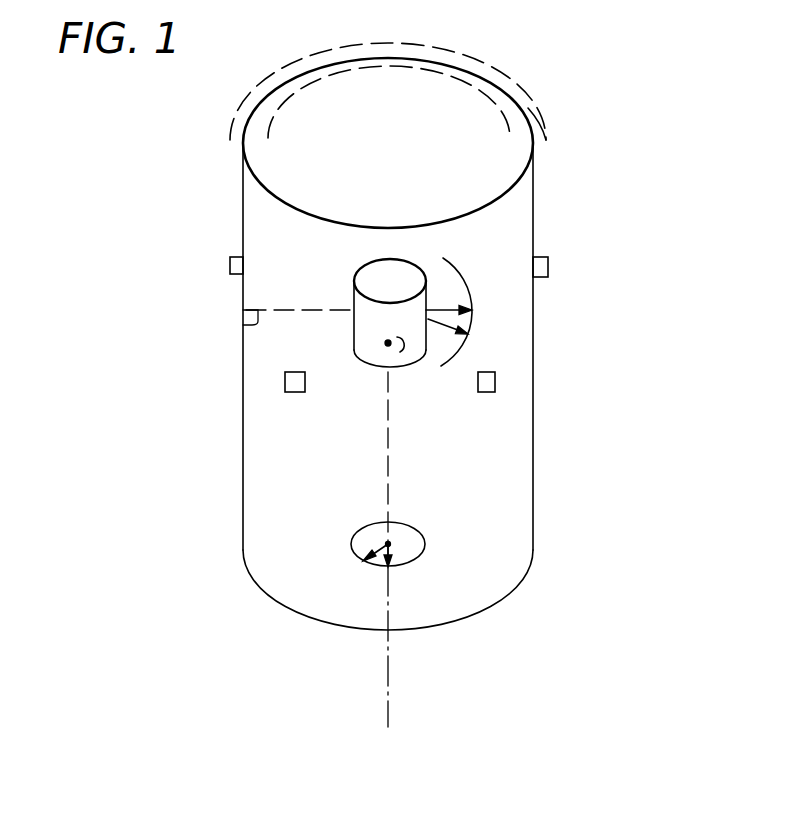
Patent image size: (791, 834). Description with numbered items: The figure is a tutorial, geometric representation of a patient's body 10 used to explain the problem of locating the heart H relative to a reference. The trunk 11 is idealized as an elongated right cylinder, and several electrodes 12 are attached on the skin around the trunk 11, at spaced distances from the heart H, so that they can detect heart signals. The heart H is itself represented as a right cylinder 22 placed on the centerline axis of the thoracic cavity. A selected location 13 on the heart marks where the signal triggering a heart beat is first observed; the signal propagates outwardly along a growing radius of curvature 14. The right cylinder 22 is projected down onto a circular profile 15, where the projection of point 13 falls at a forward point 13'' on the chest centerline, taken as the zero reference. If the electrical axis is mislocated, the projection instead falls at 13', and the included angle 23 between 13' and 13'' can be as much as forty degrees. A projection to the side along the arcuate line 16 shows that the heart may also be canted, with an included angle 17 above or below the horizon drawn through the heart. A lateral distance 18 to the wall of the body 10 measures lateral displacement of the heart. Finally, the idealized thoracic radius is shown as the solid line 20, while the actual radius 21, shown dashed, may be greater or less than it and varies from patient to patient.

The body 10 is at (166, 548).
The trunk 11 is at (533, 548).
The electrodes 12 is at (550, 266).
The selected location 13 is at (360, 383).
The projected point 13' is at (297, 588).
The projected point 13'' is at (440, 613).
The radius of curvature 14 is at (404, 346).
The circular profile 15 is at (412, 528).
The arcuate line 16 is at (455, 265).
The included angle 17 is at (470, 322).
The lateral distance 18 is at (243, 324).
The radius 20 is at (530, 108).
The actual radius 21 is at (503, 70).
The right cylinder 22 is at (381, 259).
The included angle 23 is at (375, 567).
The heart H is at (364, 268).